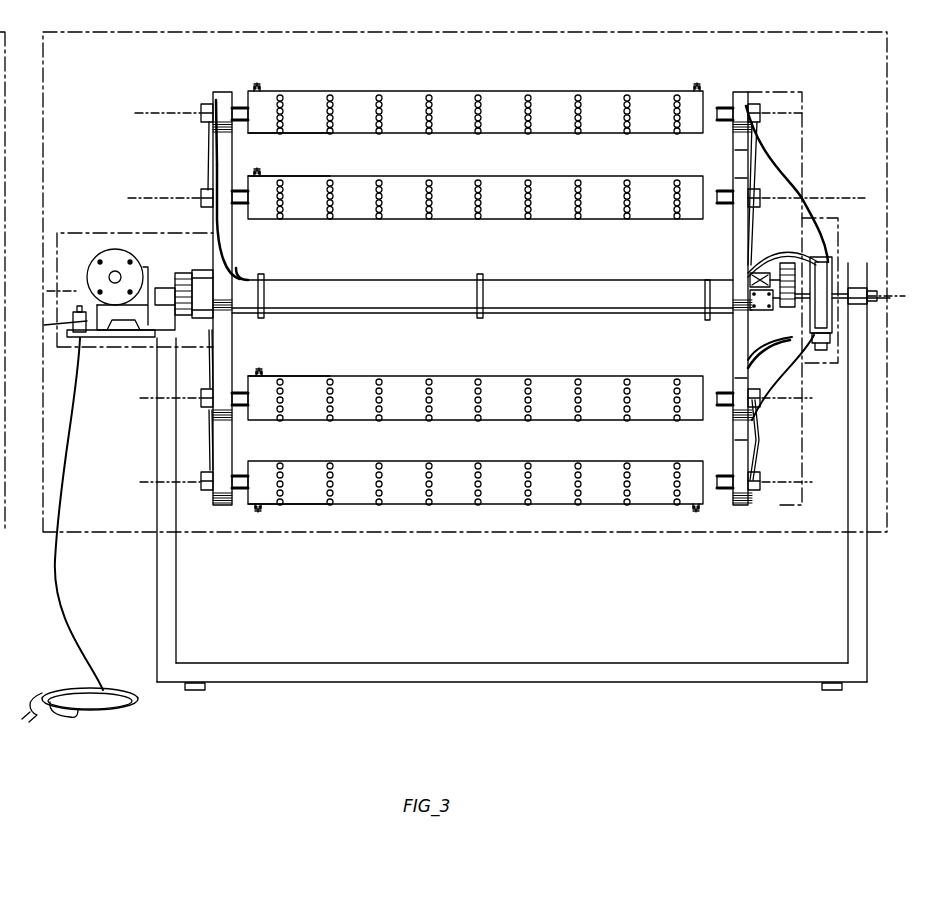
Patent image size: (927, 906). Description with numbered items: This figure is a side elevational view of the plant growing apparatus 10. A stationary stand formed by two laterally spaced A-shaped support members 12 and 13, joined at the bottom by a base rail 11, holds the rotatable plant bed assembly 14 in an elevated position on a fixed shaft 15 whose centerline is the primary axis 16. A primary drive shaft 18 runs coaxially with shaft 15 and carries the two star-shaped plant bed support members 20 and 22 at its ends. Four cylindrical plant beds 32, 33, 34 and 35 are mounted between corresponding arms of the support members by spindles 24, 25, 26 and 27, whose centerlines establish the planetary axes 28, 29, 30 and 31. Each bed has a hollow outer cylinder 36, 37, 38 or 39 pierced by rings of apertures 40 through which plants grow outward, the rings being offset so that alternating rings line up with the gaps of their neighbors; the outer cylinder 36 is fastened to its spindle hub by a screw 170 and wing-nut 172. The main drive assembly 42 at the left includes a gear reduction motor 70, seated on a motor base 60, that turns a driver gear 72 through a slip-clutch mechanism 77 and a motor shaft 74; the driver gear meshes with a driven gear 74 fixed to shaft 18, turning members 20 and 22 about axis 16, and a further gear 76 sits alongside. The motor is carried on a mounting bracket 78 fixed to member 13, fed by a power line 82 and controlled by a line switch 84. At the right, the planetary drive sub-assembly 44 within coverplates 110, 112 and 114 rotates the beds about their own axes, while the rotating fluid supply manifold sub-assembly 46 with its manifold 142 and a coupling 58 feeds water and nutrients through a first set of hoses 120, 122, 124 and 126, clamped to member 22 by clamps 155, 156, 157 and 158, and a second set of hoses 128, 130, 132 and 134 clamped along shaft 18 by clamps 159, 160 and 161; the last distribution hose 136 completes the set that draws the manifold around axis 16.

The apparatus 10 is at (281, 692).
The base rail 11 is at (396, 663).
The A-shaped support member 12 is at (848, 598).
The A-shaped support member 13 is at (176, 598).
The rotatable plant bed assembly 14 is at (545, 31).
The fixed shaft 15 is at (842, 287).
The primary axis 16 is at (70, 291).
The primary drive shaft 18 is at (352, 314).
The star-shaped plant bed support member 20 is at (214, 167).
The star-shaped plant bed support member 22 is at (733, 254).
The spindle 24 is at (236, 93).
The spindle 25 is at (240, 406).
The spindle 26 is at (236, 490).
The spindle 27 is at (240, 206).
The planetary axis 28 is at (160, 115).
The planetary axis 29 is at (141, 389).
The planetary axis 30 is at (141, 482).
The planetary axis 31 is at (142, 199).
The cylindrical plant bed 32 is at (422, 90).
The cylindrical plant bed 33 is at (404, 376).
The cylindrical plant bed 34 is at (400, 461).
The cylindrical plant bed 35 is at (420, 219).
The hollow outer cylinder 36 is at (264, 133).
The hollow outer cylinder 37 is at (248, 377).
The hollow outer cylinder 38 is at (344, 504).
The hollow outer cylinder 39 is at (302, 176).
The apertures 40 is at (376, 128).
The main drive assembly 42 is at (82, 232).
The planetary drive sub-assembly 44 is at (784, 506).
The rotating fluid supply manifold sub-assembly 46 is at (838, 245).
The coupling 58 is at (866, 305).
The motor base 60 is at (152, 325).
The gear reduction motor 70 is at (120, 312).
The driver gear 72 is at (186, 310).
The driven gear 74 is at (172, 285).
The gear 76 is at (206, 272).
The slip-clutch mechanism 77 is at (150, 265).
The mounting bracket 78 is at (70, 338).
The power line 82 is at (64, 494).
The line switch 84 is at (53, 318).
The coverplate 110 is at (736, 178).
The coverplate 112 is at (740, 374).
The coverplate 114 is at (738, 442).
The hose 120 is at (738, 160).
The hose 122 is at (780, 348).
The hose 124 is at (790, 412).
The hose 126 is at (758, 230).
The hose 128 is at (212, 128).
The hose 130 is at (210, 343).
The hose 132 is at (210, 450).
The hose 134 is at (211, 228).
The distribution hose 136 is at (832, 330).
The manifold 142 is at (830, 264).
The clamp 155 is at (751, 156).
The clamp 156 is at (750, 370).
The clamp 157 is at (758, 448).
The cable 158 is at (758, 268).
The clamp 159 is at (262, 318).
The clamp 160 is at (480, 318).
The clamp 161 is at (708, 320).
The screw 170 is at (258, 87).
The wing-nut 172 is at (264, 90).